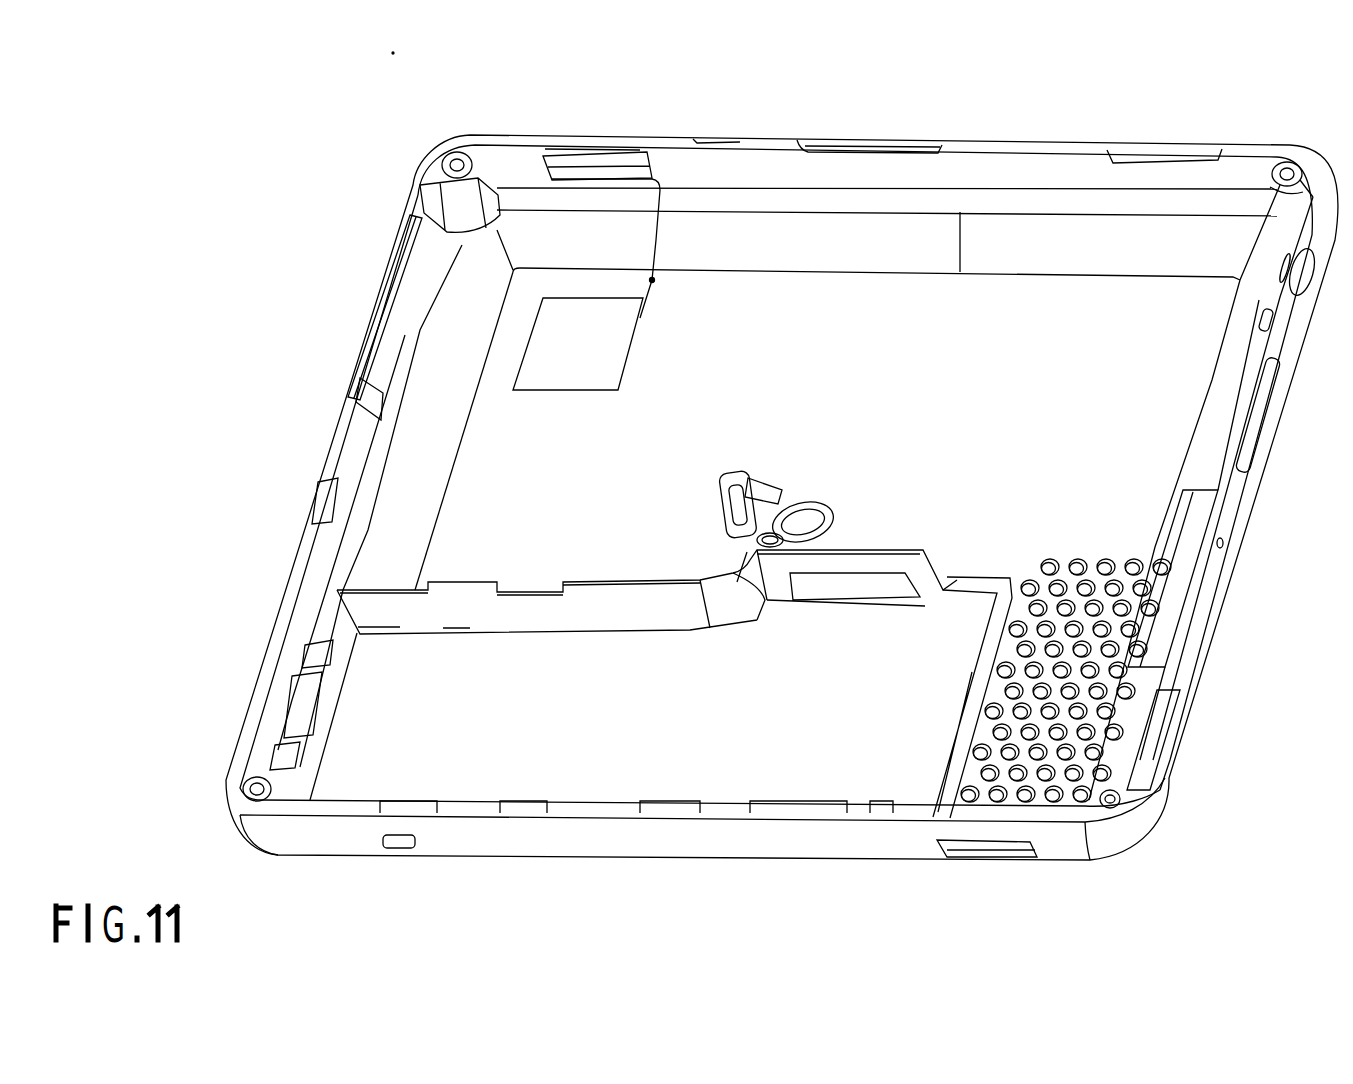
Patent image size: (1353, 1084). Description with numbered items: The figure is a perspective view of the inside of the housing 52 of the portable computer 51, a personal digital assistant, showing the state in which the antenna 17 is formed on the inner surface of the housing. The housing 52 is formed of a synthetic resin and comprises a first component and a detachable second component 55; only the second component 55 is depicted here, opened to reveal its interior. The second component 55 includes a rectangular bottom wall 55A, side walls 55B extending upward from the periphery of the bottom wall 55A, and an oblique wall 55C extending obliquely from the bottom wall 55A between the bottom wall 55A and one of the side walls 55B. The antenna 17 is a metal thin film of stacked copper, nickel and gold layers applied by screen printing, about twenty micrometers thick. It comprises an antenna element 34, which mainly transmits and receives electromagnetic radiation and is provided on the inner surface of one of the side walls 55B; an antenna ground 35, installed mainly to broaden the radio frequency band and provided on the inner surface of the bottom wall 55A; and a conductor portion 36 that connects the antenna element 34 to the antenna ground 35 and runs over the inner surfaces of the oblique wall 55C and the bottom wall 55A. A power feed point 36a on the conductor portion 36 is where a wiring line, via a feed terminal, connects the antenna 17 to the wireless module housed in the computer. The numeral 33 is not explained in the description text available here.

The antenna 17 is at (573, 148).
The boss portion 33 is at (462, 287).
The antenna element 34 is at (650, 150).
The antenna ground 35 is at (640, 328).
The conductor portion 36 is at (660, 237).
The power feed point 36a is at (655, 282).
The portable computer 51 is at (760, 120).
The housing 52 is at (1172, 147).
The second component 55 is at (1250, 513).
The bottom wall 55A is at (1025, 405).
The side walls 55B is at (1060, 172).
The oblique wall 55C is at (955, 235).